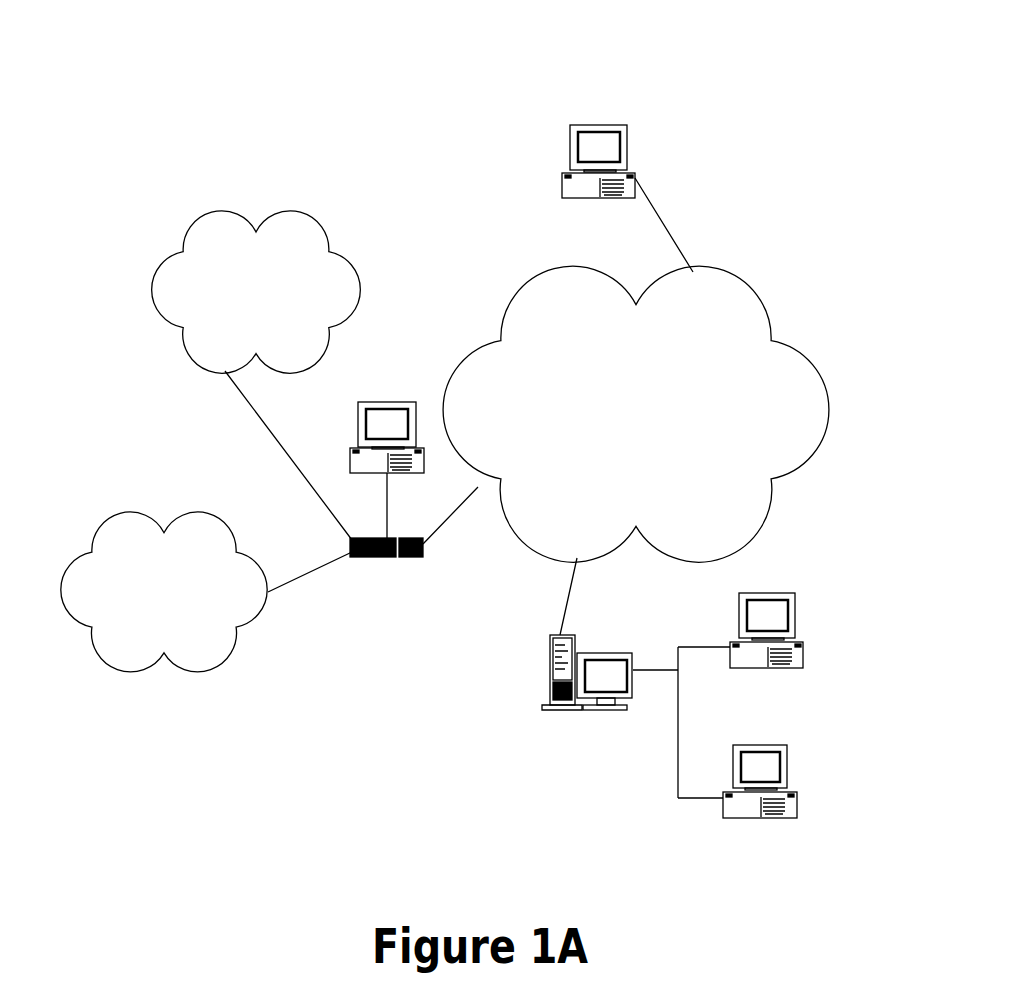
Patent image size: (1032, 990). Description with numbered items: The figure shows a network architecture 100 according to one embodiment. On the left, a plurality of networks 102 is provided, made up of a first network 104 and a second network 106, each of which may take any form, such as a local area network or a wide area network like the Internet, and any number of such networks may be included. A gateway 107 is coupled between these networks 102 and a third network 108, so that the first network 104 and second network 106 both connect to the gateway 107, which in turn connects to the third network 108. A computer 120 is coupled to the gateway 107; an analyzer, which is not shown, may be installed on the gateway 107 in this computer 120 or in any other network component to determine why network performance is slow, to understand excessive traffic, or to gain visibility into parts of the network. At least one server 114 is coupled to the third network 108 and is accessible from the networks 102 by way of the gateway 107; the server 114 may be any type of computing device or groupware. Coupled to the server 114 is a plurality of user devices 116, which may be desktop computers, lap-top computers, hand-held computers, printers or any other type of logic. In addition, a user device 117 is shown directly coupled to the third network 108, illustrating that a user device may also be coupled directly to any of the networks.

The network architecture 100 is at (243, 82).
The plurality of networks 102 is at (109, 370).
The first network 104 is at (98, 540).
The second network 106 is at (338, 258).
The gateway 107 is at (348, 560).
The third network 108 is at (798, 350).
The server 114 is at (550, 680).
The user devices 116 is at (795, 628).
The user device 117 is at (623, 150).
The computer 120 is at (388, 402).